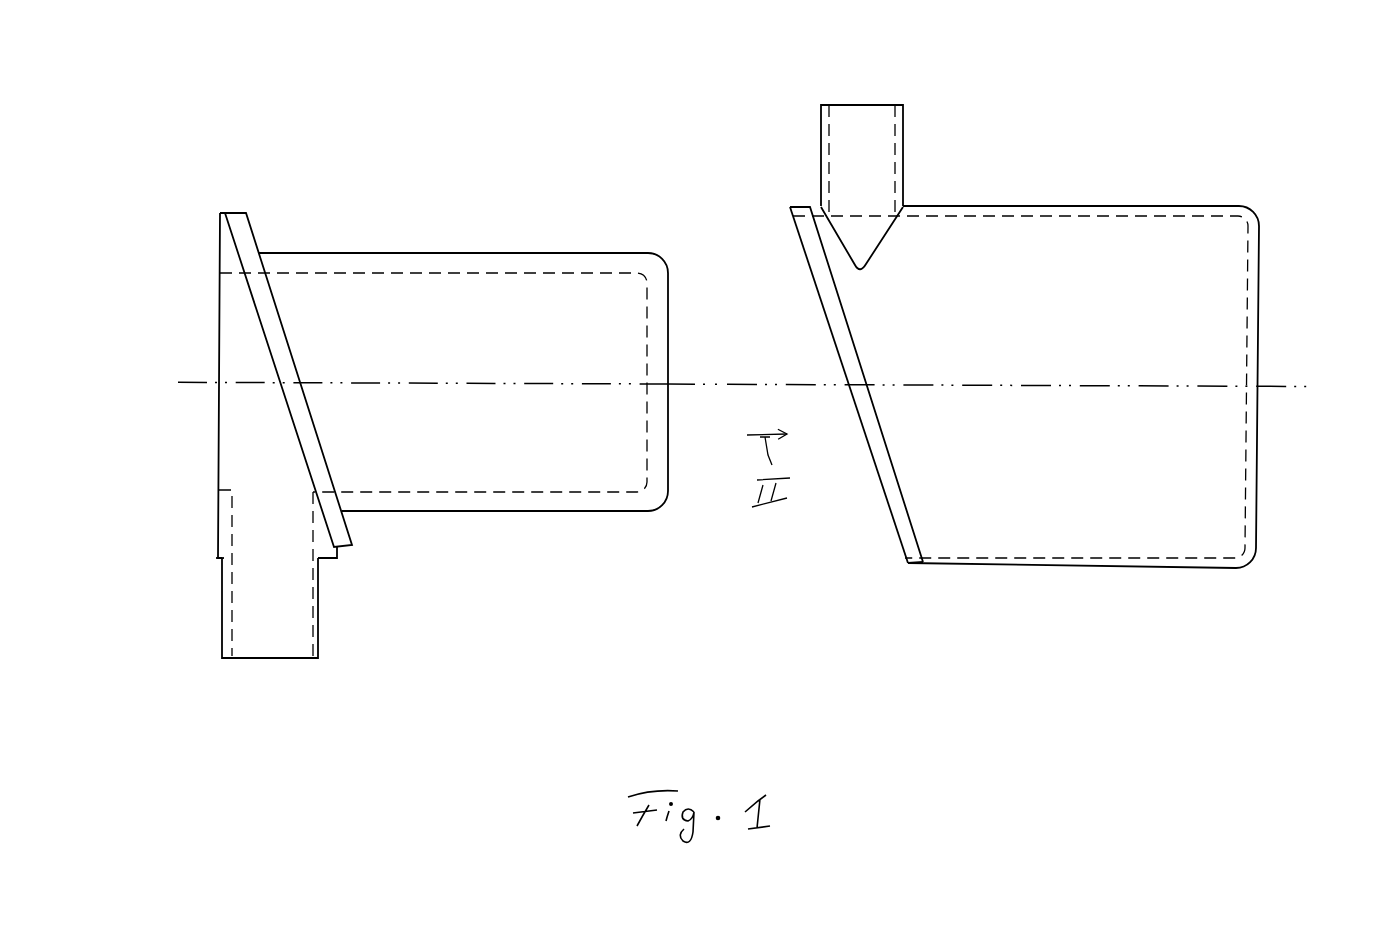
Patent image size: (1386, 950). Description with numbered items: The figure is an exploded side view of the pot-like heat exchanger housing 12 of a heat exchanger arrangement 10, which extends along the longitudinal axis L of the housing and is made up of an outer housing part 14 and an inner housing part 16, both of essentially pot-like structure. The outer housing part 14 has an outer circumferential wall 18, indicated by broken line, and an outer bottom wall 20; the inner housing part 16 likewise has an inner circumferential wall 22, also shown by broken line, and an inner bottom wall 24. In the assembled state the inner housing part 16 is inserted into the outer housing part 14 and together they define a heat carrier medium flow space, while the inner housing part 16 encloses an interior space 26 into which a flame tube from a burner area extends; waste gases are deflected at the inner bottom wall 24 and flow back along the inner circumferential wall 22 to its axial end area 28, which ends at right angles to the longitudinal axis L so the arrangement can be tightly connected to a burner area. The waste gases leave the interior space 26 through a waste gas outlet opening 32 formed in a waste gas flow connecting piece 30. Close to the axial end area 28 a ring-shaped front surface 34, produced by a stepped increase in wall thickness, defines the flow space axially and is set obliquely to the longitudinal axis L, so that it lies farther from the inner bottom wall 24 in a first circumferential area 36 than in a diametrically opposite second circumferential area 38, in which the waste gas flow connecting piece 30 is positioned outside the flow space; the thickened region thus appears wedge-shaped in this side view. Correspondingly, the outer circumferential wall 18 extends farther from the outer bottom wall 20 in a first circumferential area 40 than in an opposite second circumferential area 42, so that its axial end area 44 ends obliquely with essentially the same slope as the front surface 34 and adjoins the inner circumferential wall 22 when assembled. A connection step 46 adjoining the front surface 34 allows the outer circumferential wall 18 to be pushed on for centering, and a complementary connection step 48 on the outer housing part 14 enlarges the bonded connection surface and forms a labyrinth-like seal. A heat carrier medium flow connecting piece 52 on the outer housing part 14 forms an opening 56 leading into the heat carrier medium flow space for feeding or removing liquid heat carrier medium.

The heat exchanger arrangement 10 is at (1063, 108).
The heat exchanger housing 12 is at (470, 113).
The outer housing part 14 is at (1082, 420).
The inner housing part 16 is at (486, 376).
The outer circumferential wall 18 is at (1064, 215).
The outer bottom wall 20 is at (1255, 290).
The inner circumferential wall 22 is at (438, 262).
The inner bottom wall 24 is at (658, 348).
The interior space 26 is at (437, 462).
The axial end area 28 is at (200, 461).
The waste gas flow connecting piece 30 is at (323, 615).
The waste gas outlet opening 32 is at (255, 562).
The front surface 34 is at (258, 241).
The first circumferential area 36 is at (243, 192).
The second circumferential area 38 is at (180, 547).
The first circumferential area 40 is at (832, 351).
The second circumferential area 42 is at (905, 598).
The axial end area 44 is at (855, 490).
The connection step 46 is at (349, 555).
The complementary connection step 48 is at (910, 525).
The heat carrier medium flow connecting piece 52 is at (905, 135).
The opening 56 is at (913, 154).
The longitudinal axis of the housing L is at (1217, 388).